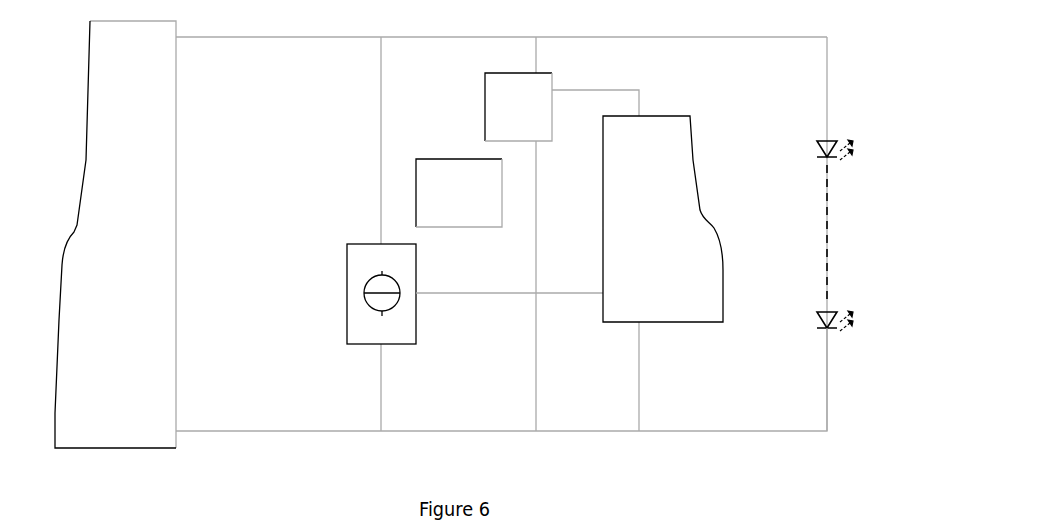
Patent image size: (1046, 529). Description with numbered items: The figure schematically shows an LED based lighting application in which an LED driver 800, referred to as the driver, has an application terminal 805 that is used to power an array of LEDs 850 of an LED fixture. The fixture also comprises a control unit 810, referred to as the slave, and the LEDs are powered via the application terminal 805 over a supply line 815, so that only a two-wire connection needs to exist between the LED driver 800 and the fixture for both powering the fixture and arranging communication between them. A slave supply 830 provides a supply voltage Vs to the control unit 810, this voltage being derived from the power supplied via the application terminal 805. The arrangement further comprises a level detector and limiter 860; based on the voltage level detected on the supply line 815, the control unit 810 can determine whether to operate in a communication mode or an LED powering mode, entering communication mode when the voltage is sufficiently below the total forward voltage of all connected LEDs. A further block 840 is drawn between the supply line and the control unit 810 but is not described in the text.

The LED driver 800 is at (90, 457).
The application terminal 805 is at (176, 38).
The supply line 815 is at (350, 37).
The slave supply 830 is at (555, 72).
The level detector and limiter 860 is at (423, 147).
The current source 840 is at (341, 279).
The control unit 810 is at (628, 330).
The array of LEDs 850 is at (815, 147).